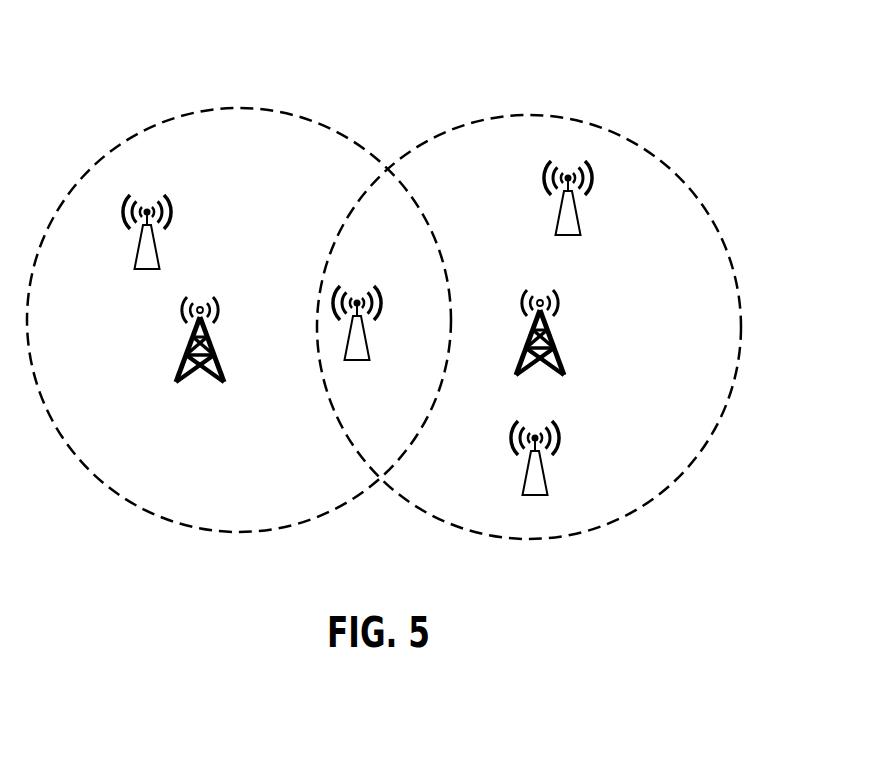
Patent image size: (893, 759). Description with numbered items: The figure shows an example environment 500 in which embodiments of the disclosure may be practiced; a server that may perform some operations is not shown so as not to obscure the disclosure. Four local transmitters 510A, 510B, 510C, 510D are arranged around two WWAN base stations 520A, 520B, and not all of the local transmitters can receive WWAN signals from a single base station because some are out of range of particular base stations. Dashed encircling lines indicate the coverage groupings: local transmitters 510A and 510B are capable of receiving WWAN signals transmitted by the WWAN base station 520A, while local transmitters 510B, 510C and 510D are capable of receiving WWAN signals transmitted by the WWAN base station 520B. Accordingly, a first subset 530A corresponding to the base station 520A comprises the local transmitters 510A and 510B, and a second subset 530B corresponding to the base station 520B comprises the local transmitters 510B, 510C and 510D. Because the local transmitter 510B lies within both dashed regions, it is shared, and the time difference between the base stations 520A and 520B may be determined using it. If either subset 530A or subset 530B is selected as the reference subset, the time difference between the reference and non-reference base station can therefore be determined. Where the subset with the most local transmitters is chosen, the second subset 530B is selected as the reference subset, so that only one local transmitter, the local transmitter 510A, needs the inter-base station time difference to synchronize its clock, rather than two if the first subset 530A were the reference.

The example environment 500 is at (648, 30).
The local transmitter 510A is at (150, 256).
The local transmitter 510B is at (360, 347).
The local transmitter 510C is at (572, 222).
The local transmitter 510D is at (540, 482).
The WWAN base station 520A is at (215, 360).
The WWAN base station 520B is at (555, 350).
The first subset 530A is at (338, 131).
The second subset 530B is at (667, 167).